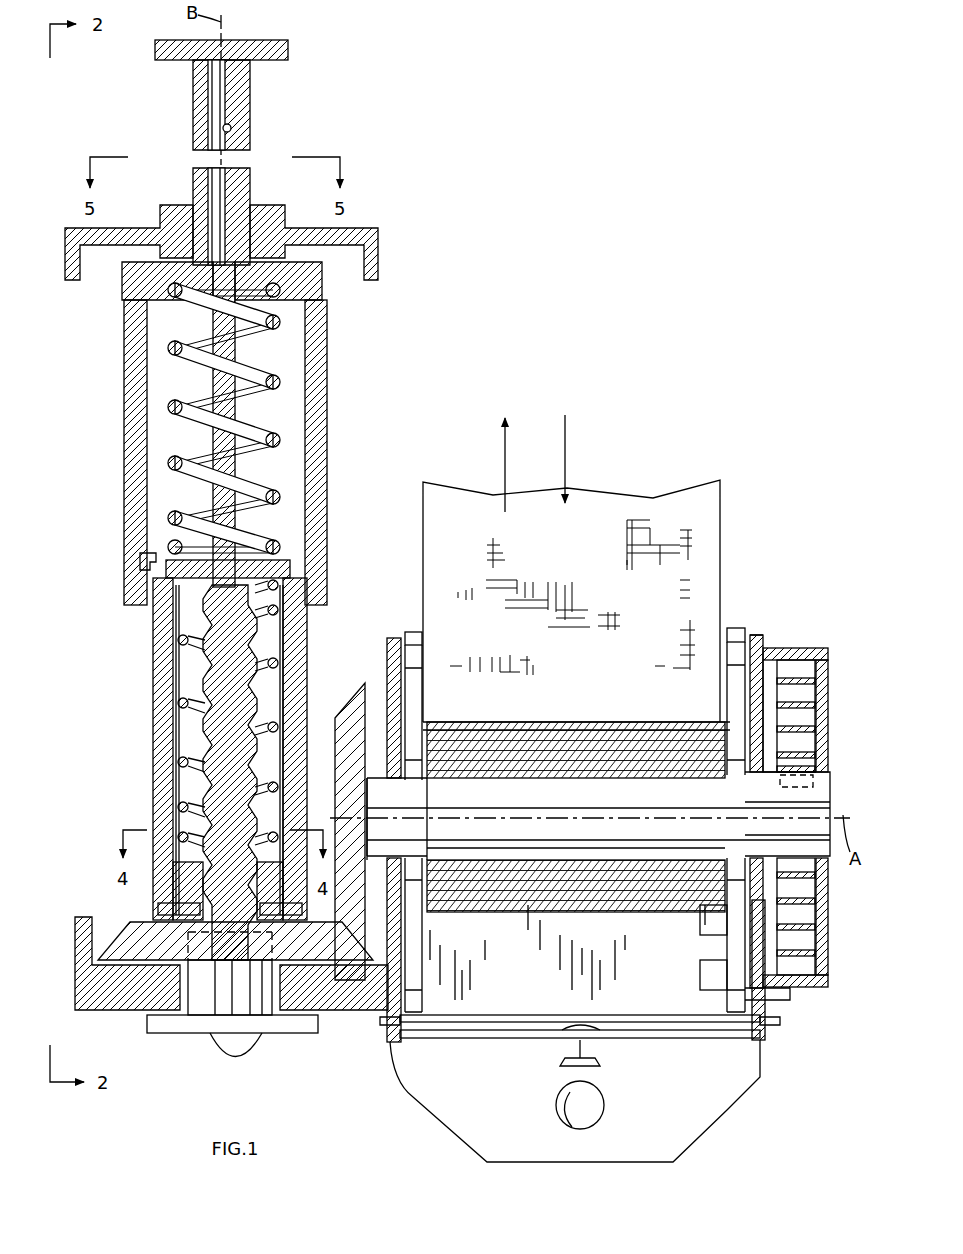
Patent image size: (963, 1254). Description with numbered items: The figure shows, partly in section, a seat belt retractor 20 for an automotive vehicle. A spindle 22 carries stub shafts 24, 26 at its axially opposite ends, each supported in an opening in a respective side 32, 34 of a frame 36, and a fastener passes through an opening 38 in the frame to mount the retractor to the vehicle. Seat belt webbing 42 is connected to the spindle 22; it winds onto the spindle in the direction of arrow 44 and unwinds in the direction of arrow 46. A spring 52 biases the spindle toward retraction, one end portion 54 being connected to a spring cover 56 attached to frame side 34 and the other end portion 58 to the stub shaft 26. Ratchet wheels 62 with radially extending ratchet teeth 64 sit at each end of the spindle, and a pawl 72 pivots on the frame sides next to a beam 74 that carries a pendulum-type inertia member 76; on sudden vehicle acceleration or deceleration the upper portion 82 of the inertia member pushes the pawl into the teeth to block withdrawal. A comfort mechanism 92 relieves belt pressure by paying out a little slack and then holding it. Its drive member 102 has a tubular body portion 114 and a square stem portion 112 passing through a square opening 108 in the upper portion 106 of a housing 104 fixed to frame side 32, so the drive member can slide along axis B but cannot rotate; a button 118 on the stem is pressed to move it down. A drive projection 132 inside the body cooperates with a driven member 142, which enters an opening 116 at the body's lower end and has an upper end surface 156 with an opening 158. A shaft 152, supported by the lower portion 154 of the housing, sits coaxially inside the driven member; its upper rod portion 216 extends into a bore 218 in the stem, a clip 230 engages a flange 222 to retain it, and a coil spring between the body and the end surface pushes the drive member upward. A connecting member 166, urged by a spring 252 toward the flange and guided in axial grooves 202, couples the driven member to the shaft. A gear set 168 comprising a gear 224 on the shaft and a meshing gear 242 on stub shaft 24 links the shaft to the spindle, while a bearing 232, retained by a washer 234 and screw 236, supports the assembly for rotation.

The seat belt retractor 20 is at (600, 166).
The spindle 22 is at (598, 760).
The stub shaft 24 is at (466, 722).
The stub shaft 26 is at (815, 800).
The frame side 32 is at (420, 985).
The frame side 34 is at (765, 1000).
The frame 36 is at (738, 1082).
The opening 38 is at (562, 1100).
The seat belt webbing 42 is at (700, 515).
The arrow 44 is at (568, 458).
The arrow 46 is at (500, 468).
The spring 52 is at (803, 650).
The end portion 54 is at (795, 648).
The spring cover 56 is at (826, 915).
The end portion 58 is at (798, 780).
The ratchet wheel 62 is at (410, 630).
The ratchet teeth 64 is at (735, 970).
The pawl 72 is at (640, 1016).
The beam 74 is at (698, 1036).
The inertia member 76 is at (598, 1062).
The upper portion 82 is at (580, 1028).
The comfort mechanism 92 is at (118, 484).
The drive member 102 is at (271, 452).
The housing 104 is at (77, 222).
The upper portion 106 is at (375, 236).
The opening 108 is at (150, 272).
The stem portion 112 is at (245, 102).
The body portion 114 is at (312, 396).
The opening 116 is at (155, 622).
The button 118 is at (272, 52).
The drive projection 132 is at (140, 560).
The driven member 142 is at (226, 749).
The shaft 152 is at (218, 748).
The lower portion 154 is at (105, 1000).
The upper end surface 156 is at (175, 570).
The opening 158 is at (270, 552).
The connecting member 166 is at (173, 845).
The gear set 168 is at (372, 941).
The axial grooves 202 is at (178, 780).
The upper rod portion 216 is at (232, 346).
The bore 218 is at (233, 130).
The flange 222 is at (310, 1030).
The gear 224 is at (140, 940).
The clip 230 is at (160, 906).
The bearing 232 is at (200, 1020).
The washer 234 is at (255, 1030).
The screw 236 is at (232, 1050).
The gear 242 is at (352, 720).
The spring 252 is at (178, 640).